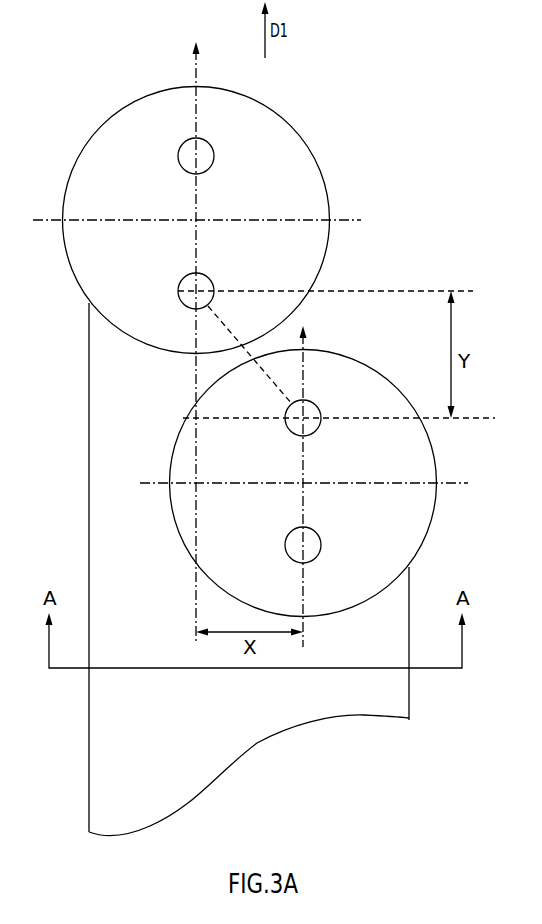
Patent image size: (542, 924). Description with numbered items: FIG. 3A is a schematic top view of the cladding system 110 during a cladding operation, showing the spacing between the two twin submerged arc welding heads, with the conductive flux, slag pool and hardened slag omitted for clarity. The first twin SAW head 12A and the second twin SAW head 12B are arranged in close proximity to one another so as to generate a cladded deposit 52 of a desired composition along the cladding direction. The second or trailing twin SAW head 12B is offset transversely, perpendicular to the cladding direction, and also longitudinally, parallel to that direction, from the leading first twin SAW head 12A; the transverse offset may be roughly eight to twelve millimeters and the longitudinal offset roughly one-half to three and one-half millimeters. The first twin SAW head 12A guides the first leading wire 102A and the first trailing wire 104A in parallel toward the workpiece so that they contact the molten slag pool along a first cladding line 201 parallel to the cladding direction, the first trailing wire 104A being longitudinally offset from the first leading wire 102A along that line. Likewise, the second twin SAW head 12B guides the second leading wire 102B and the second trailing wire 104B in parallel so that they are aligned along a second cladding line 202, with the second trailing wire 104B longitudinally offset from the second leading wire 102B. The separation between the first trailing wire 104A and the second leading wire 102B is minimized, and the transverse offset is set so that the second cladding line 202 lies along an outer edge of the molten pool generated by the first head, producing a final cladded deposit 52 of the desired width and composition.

The cladding system 110 is at (440, 187).
The first twin SAW head 12A is at (310, 148).
The second twin SAW head 12B is at (433, 520).
The first cladding line 201 is at (196, 106).
The second cladding line 202 is at (303, 461).
The first leading wire 102A is at (178, 150).
The first trailing wire 104A is at (178, 285).
The second leading wire 102B is at (285, 422).
The second trailing wire 104B is at (285, 540).
The cladded deposit 52 is at (388, 633).